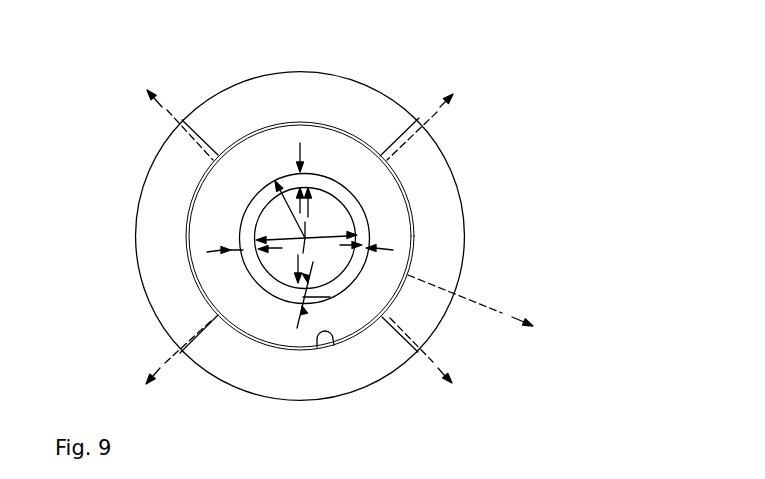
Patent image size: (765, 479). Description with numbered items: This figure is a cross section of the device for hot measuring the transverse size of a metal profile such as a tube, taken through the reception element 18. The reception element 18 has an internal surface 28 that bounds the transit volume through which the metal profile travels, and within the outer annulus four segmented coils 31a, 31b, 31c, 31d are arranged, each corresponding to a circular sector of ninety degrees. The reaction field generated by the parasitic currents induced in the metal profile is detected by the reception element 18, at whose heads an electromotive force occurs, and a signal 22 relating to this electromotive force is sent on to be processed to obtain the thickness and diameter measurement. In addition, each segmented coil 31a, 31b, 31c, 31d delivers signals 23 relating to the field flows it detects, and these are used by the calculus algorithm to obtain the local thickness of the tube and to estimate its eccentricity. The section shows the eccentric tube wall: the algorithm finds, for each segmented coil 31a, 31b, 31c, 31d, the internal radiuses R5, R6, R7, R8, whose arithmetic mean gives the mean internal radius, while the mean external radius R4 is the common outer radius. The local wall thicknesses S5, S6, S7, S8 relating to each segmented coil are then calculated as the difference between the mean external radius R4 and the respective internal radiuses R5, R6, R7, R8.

The reception element 18 is at (352, 335).
The signal 22 is at (503, 313).
The signals 23 is at (167, 110).
The internal surface 28 is at (317, 347).
The segmented coil 31a is at (462, 277).
The segmented coil 31b is at (312, 72).
The segmented coil 31c is at (148, 168).
The segmented coil 31d is at (357, 393).
The mean external radius R4 is at (286, 198).
The internal radius R5 is at (330, 237).
The internal radius R6 is at (305, 220).
The internal radius R7 is at (280, 239).
The internal radius R8 is at (303, 253).
The local wall thickness S5 is at (363, 247).
The local wall thickness S6 is at (309, 186).
The local wall thickness S7 is at (243, 250).
The local wall thickness S8 is at (303, 297).